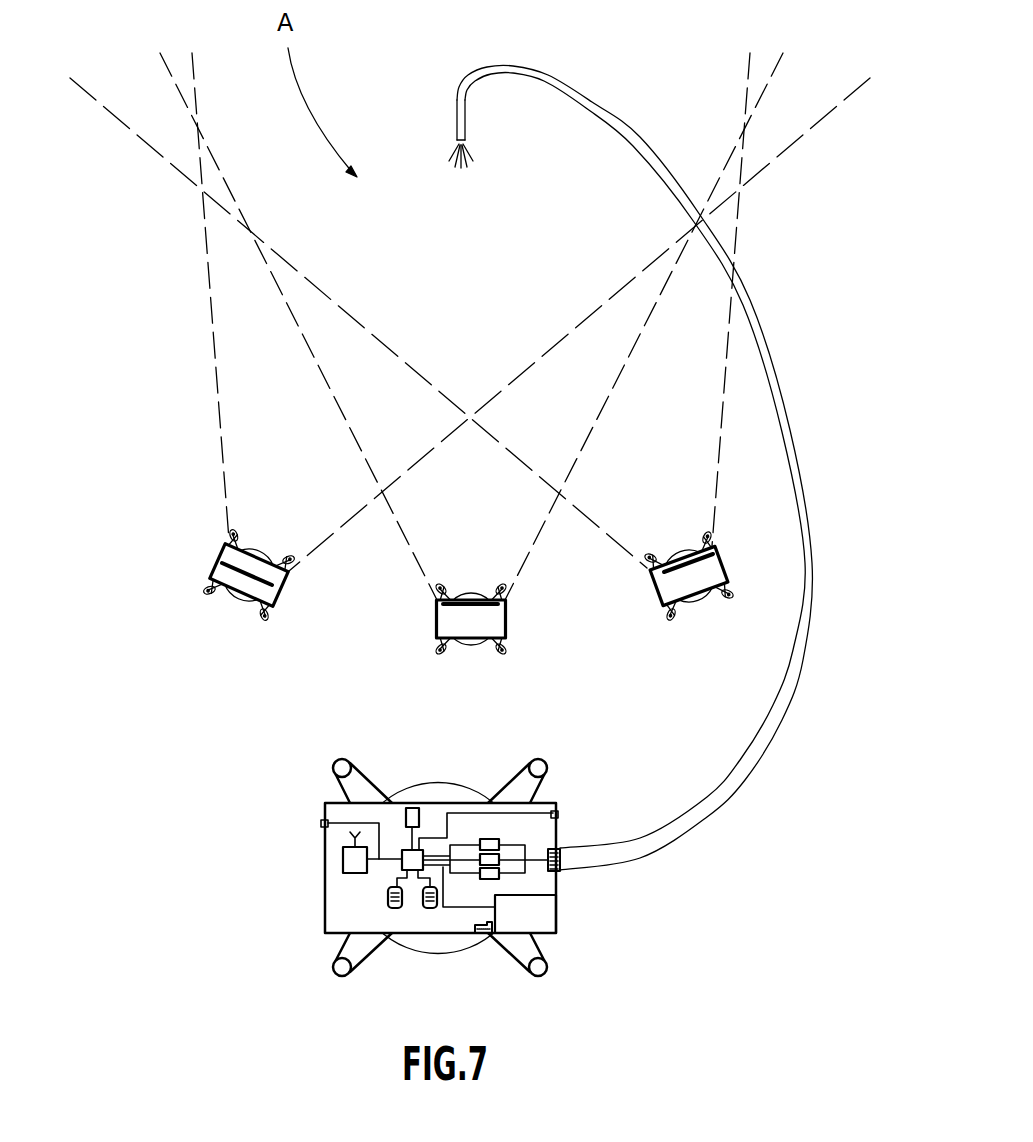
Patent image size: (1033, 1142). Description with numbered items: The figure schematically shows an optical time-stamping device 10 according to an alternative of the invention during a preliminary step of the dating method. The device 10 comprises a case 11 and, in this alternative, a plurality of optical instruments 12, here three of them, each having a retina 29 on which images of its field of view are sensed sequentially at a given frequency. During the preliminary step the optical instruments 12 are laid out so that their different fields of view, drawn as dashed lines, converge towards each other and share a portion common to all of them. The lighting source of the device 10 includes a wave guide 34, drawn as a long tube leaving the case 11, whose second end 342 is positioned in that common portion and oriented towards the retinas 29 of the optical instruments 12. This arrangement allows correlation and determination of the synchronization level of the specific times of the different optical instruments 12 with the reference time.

The optical time-stamping device 10 is at (397, 860).
The case 11 is at (443, 803).
The optical instrument 12 is at (238, 597).
The retina 29 is at (468, 605).
The wave guide 34 is at (626, 846).
The second end of the wave guide 342 is at (457, 123).